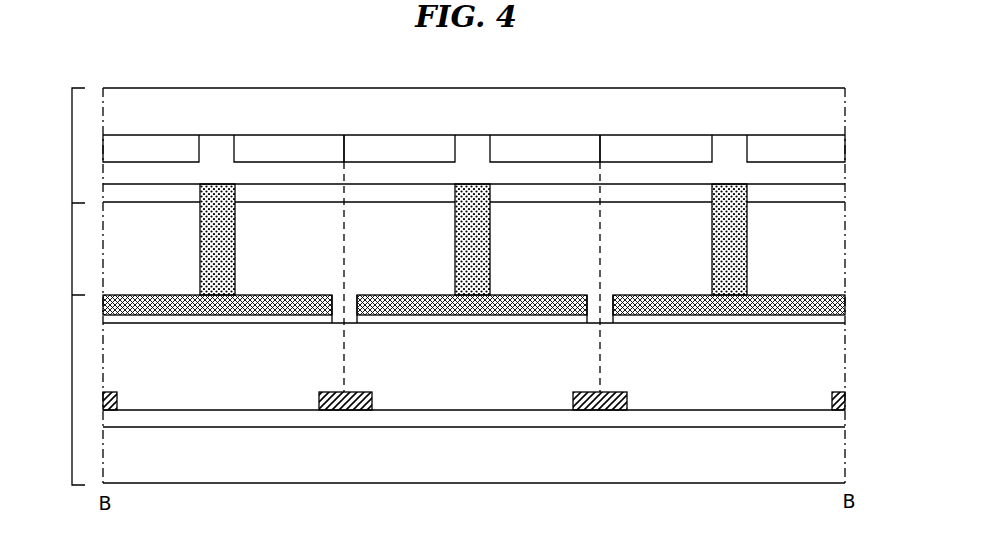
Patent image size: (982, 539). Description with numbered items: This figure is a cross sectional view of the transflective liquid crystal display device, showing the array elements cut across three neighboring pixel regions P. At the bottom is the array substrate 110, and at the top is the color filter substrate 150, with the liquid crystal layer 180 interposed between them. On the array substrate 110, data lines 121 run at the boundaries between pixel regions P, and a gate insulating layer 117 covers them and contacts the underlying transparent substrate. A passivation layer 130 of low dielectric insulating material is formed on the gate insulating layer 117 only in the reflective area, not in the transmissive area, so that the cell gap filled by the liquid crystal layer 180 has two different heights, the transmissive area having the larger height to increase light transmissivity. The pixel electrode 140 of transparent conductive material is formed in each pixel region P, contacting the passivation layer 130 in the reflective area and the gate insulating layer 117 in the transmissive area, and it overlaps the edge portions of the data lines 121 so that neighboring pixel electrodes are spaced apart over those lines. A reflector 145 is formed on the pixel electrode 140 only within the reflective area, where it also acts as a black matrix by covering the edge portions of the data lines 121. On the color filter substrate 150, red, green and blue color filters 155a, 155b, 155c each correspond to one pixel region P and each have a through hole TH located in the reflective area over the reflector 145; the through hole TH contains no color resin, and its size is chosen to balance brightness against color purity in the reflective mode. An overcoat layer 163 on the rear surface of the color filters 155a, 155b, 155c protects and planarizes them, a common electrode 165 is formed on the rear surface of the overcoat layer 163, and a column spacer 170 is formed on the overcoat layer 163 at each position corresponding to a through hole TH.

The color filter substrate 150 is at (534, 118).
The red color filter 155a is at (158, 138).
The green color filter 155b is at (375, 138).
The blue color filter 155c is at (632, 138).
The through hole TH is at (220, 140).
The overcoat layer 163 is at (825, 175).
The common electrode 165 is at (390, 193).
The column spacer 170 is at (235, 233).
The liquid crystal layer 180 is at (38, 263).
The reflector 145 is at (322, 295).
The pixel electrode 140 is at (220, 323).
The passivation layer 130 is at (837, 345).
The data line 121 is at (350, 410).
The gate insulating layer 117 is at (837, 418).
The array substrate 110 is at (491, 475).
The pixel region P is at (832, 445).